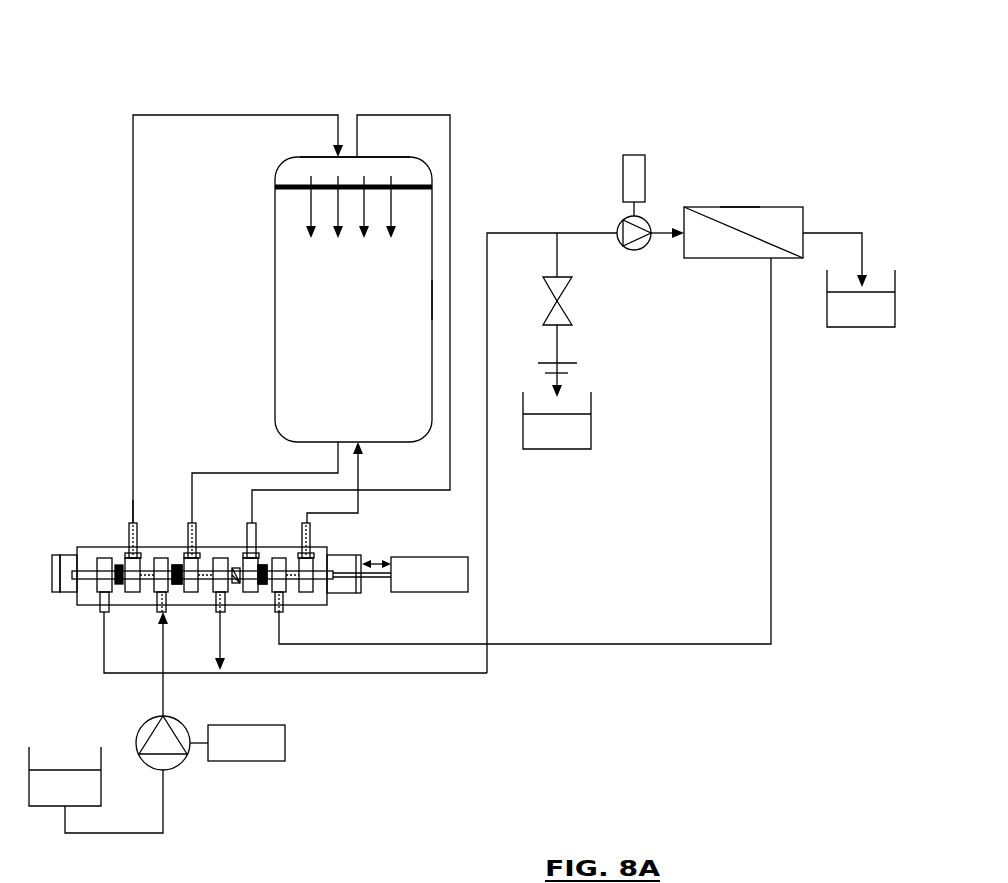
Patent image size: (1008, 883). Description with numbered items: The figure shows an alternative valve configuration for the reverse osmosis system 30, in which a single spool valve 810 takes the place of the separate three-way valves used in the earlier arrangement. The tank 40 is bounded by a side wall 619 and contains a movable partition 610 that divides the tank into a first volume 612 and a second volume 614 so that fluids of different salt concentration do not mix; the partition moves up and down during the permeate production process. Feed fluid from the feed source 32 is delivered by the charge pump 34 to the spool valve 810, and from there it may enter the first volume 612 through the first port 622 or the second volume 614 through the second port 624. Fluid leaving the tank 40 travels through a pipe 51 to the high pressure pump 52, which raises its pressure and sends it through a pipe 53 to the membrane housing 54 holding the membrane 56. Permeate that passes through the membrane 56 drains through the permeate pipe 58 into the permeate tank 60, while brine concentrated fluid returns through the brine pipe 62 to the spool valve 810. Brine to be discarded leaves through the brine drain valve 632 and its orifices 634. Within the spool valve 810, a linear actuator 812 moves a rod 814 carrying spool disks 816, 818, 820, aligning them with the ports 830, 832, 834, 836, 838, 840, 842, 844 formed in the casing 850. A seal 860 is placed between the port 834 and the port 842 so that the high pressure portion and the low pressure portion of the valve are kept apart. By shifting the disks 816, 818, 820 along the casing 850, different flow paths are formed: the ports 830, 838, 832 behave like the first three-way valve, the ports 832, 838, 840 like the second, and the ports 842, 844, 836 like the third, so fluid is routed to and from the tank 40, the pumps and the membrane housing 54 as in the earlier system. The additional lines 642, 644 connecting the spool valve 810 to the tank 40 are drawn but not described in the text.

The reverse osmosis system 30 is at (83, 30).
The feed source 32 is at (101, 790).
The charge pump 34 is at (150, 720).
The tank 40 is at (275, 297).
The pipe 51 is at (523, 233).
The high pressure pump 52 is at (618, 222).
The pipe 53 is at (660, 230).
The membrane housing 54 is at (720, 222).
The membrane 56 is at (745, 207).
The permeate pipe 58 is at (855, 233).
The permeate tank 60 is at (845, 327).
The brine pipe 62 is at (771, 345).
The movable partition 610 is at (285, 180).
The first volume 612 is at (430, 168).
The second volume 614 is at (420, 215).
The side wall 619 is at (432, 297).
The first port 622 is at (335, 125).
The second port 624 is at (338, 456).
The brine drain valve 632 is at (565, 310).
The orifices 634 is at (562, 370).
The return line 642 is at (360, 128).
The feed line 644 is at (362, 465).
The spool valve 810 is at (52, 556).
The linear actuator 812 is at (415, 557).
The rod 814 is at (375, 580).
The spool disk 816 is at (125, 565).
The spool disk 818 is at (178, 566).
The spool disk 820 is at (266, 566).
The port 830 is at (100, 612).
The port 832 is at (157, 613).
The port 834 is at (216, 613).
The port 836 is at (275, 613).
The port 838 is at (130, 520).
The port 840 is at (192, 523).
The port 842 is at (247, 530).
The port 844 is at (312, 527).
The casing 850 is at (345, 593).
The seal 860 is at (233, 583).